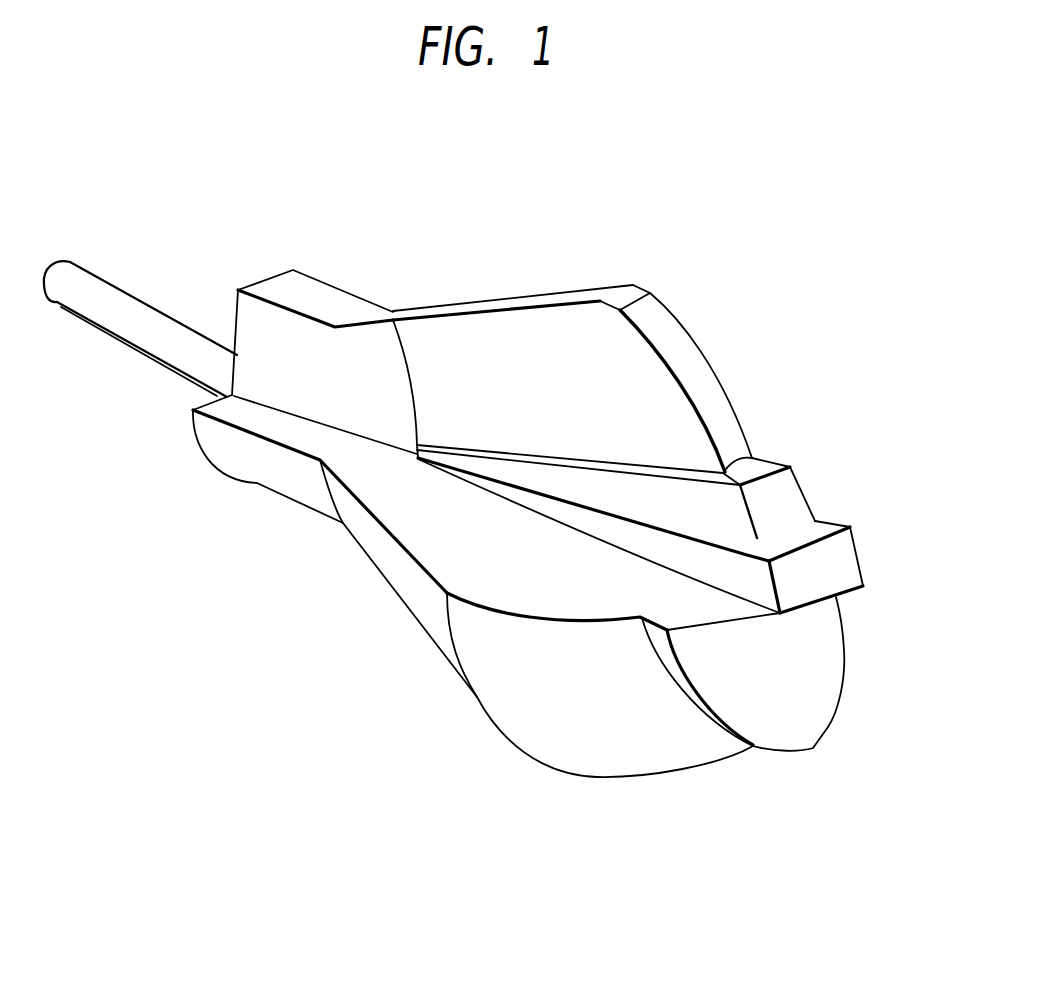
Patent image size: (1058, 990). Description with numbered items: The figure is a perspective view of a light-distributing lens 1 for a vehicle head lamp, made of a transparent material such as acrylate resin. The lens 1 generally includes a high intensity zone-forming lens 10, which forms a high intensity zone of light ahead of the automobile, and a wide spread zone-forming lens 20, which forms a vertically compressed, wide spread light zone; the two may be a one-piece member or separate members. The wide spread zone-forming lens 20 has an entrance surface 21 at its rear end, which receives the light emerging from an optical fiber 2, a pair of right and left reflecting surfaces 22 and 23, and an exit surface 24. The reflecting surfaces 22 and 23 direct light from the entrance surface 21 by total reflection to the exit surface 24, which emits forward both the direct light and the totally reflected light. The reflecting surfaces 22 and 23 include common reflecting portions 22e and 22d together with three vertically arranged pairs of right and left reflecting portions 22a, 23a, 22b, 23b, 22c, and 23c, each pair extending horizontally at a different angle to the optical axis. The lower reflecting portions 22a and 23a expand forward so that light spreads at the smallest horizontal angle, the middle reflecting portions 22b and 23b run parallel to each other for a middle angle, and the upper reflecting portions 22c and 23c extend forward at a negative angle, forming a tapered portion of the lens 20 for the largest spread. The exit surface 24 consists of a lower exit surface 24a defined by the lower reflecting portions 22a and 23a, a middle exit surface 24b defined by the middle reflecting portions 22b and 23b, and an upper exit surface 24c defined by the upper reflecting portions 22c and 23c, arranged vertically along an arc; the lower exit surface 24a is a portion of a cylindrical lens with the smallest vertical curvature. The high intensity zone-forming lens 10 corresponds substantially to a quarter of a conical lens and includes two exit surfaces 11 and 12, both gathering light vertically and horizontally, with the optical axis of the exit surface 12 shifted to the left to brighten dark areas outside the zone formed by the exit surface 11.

The light-distributing lens 1 is at (790, 228).
The optical fiber 2 is at (125, 302).
The high intensity zone-forming lens 10 is at (746, 756).
The exit surface 11 is at (798, 702).
The exit surface 12 is at (630, 757).
The wide spread zone-forming lens 20 is at (697, 195).
The entrance surface 21 is at (307, 337).
The reflecting surface 22 is at (511, 364).
The lower reflecting portion 22a is at (728, 578).
The middle reflecting portion 22b is at (703, 508).
The upper reflecting portion 22c is at (670, 417).
The common reflecting portion 22d is at (273, 388).
The common reflecting portion 22e is at (285, 337).
The reflecting surface 23 is at (573, 364).
The lower reflecting portion 23a is at (747, 555).
The middle reflecting portion 23b is at (713, 497).
The upper reflecting portion 23c is at (647, 377).
The exit surface 24 is at (789, 484).
The lower exit surface 24a is at (815, 588).
The middle exit surface 24b is at (793, 500).
The upper exit surface 24c is at (697, 378).